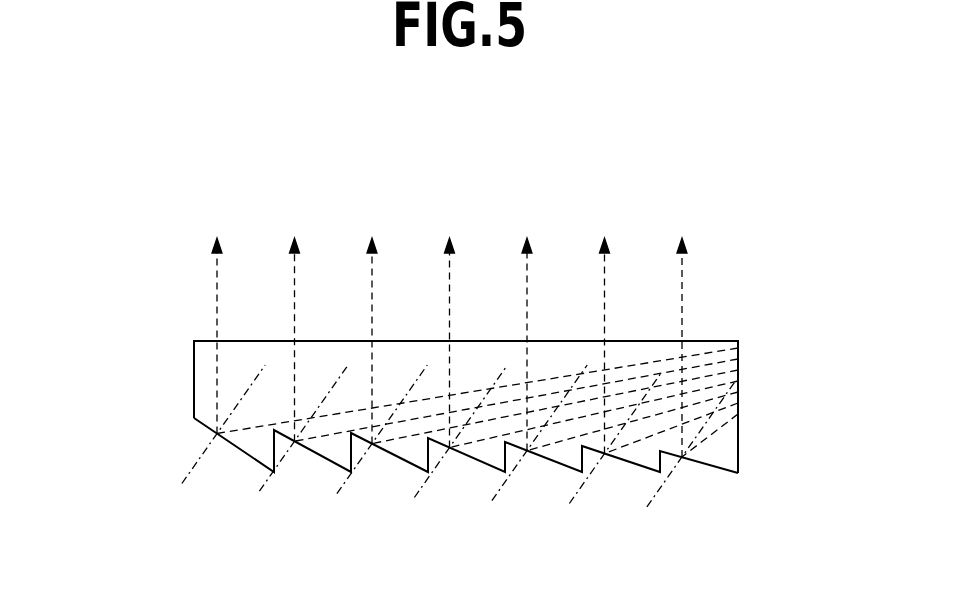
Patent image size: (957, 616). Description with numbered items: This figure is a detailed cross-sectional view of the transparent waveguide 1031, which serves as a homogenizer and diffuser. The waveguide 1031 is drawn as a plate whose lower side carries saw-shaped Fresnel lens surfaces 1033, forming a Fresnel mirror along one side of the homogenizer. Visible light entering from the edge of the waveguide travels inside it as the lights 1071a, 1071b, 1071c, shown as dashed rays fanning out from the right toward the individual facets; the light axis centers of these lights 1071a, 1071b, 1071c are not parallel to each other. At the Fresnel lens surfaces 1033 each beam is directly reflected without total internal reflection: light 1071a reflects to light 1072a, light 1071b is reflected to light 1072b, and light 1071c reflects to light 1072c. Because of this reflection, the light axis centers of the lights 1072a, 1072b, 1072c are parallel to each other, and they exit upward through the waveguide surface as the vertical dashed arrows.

The transparent waveguide 1031 is at (194, 378).
The Fresnel lens surfaces 1033 is at (480, 456).
The light 1071a is at (703, 353).
The light 1071b is at (734, 382).
The light 1071c is at (724, 440).
The light 1072a is at (213, 285).
The light 1072b is at (448, 265).
The light 1072c is at (685, 312).